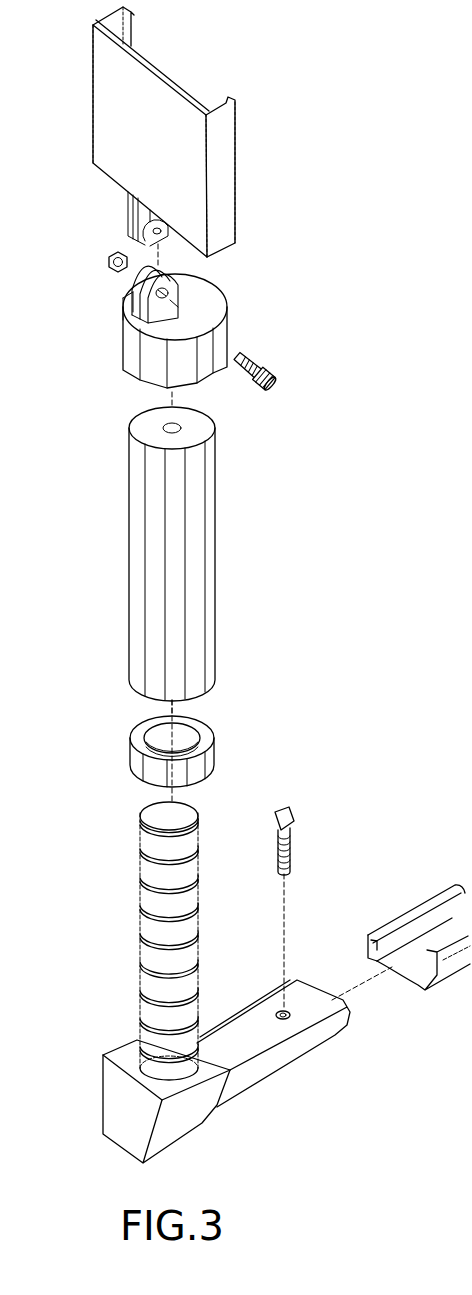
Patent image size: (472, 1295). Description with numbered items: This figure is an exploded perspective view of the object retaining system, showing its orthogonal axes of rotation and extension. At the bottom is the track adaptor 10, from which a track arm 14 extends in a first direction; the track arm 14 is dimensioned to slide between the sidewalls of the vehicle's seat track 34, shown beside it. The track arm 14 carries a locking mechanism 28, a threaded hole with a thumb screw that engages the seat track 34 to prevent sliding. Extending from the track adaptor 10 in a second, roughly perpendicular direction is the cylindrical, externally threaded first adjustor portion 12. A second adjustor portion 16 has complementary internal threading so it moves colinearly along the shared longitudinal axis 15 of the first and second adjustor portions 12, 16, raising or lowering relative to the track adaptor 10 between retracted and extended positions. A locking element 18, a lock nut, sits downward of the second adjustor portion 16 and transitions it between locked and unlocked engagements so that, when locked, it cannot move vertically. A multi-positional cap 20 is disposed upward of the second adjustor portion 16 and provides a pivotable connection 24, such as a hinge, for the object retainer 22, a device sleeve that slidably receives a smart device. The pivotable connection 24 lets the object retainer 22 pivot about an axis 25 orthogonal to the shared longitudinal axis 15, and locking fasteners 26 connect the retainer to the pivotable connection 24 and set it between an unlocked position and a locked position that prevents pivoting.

The track adaptor 10 is at (127, 1130).
The first adjustor portion 12 is at (145, 922).
The track arm 14 is at (278, 1048).
The shared longitudinal axis 15 is at (167, 712).
The second adjustor portion 16 is at (210, 597).
The locking element 18 is at (208, 743).
The multi-positional cap 20 is at (128, 355).
The object retainer 22 is at (232, 183).
The pivotable connection 24 is at (262, 372).
The axis 25 is at (192, 324).
The locking fasteners 26 is at (109, 263).
The locking mechanism 28 is at (282, 822).
The seat track 34 is at (400, 917).